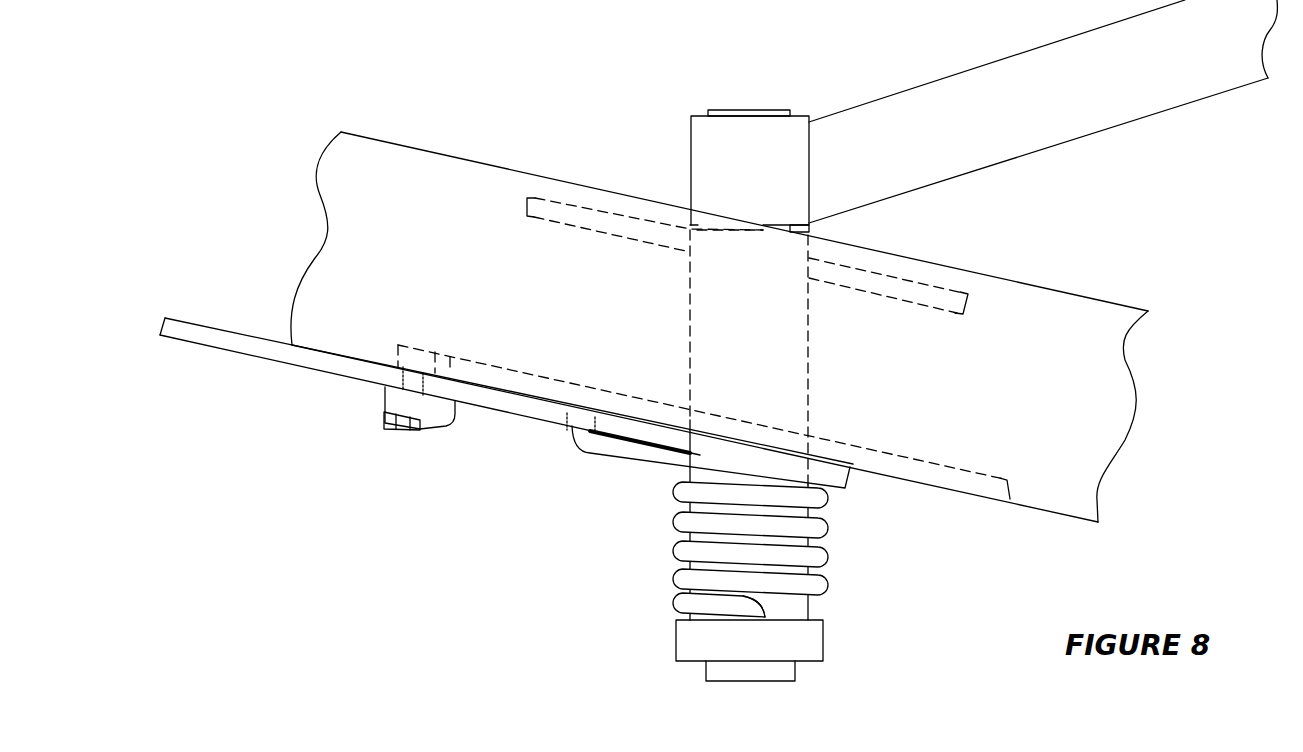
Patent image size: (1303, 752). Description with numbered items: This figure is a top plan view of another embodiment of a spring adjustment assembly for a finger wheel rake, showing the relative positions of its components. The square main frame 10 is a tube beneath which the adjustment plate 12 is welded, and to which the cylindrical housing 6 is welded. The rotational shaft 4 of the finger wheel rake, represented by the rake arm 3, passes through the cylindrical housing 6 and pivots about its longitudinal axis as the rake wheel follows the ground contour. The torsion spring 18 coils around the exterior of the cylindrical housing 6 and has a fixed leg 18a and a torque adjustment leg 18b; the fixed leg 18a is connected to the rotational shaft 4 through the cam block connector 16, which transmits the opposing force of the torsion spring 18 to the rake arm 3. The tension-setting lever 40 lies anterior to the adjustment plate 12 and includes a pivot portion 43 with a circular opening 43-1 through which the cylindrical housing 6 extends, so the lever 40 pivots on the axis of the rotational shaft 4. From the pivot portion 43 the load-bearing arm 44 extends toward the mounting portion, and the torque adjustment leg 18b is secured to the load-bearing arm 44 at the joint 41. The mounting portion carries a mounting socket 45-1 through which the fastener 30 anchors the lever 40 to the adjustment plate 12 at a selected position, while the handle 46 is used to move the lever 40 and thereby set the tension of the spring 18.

The rake arm 3 is at (1011, 128).
The rotational shaft 4 is at (750, 108).
The cylindrical housing 6 is at (752, 178).
The main frame 10 is at (600, 317).
The adjustment plate 12 is at (505, 378).
The cam block connector 16 is at (766, 655).
The torsion spring 18 is at (673, 522).
The fixed leg 18a is at (812, 608).
The torque adjustment leg 18b is at (584, 437).
The fastener 30 is at (402, 430).
The tension-setting lever 40 is at (202, 310).
The joint 41 is at (560, 412).
The pivot portion 43 is at (842, 478).
The circular opening 43-1 is at (759, 455).
The load-bearing arm 44 is at (506, 400).
The mounting socket 45-1 is at (413, 382).
The handle 46 is at (235, 340).